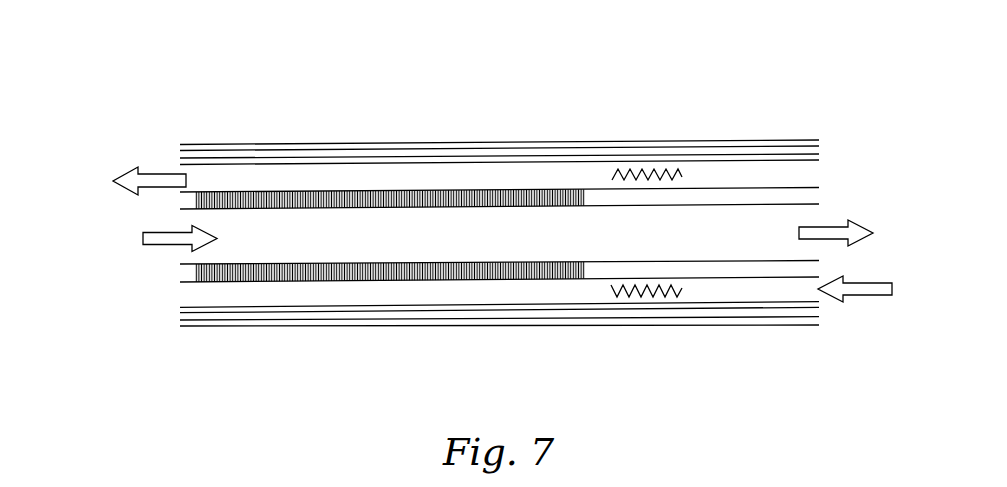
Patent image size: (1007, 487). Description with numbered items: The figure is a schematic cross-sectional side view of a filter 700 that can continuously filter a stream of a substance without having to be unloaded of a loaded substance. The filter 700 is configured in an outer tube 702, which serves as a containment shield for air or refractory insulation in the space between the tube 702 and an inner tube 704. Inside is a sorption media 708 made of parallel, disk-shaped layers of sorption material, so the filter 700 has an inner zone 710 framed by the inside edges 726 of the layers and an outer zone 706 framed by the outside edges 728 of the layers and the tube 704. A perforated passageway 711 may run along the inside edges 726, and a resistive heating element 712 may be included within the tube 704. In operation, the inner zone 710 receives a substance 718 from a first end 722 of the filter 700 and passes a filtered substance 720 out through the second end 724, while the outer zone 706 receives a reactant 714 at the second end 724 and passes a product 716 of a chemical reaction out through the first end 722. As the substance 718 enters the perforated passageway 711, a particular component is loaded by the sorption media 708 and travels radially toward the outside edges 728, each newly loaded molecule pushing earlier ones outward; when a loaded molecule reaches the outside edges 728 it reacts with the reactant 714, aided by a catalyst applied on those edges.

The filter 700 is at (385, 57).
The tube 702 is at (562, 142).
The tube 704 is at (657, 157).
The outer zone 706 is at (399, 178).
The sorption media 708 is at (273, 190).
The inner zone 710 is at (277, 252).
The perforated passageway 711 is at (383, 248).
The resistive heating element 712 is at (665, 293).
The reactant 714 is at (865, 296).
The product 716 is at (160, 173).
The substance 718 is at (170, 247).
The filtered substance 720 is at (835, 226).
The first end 722 is at (182, 328).
The second end 724 is at (818, 325).
The inside edges 726 is at (453, 263).
The outside edges 728 is at (537, 278).